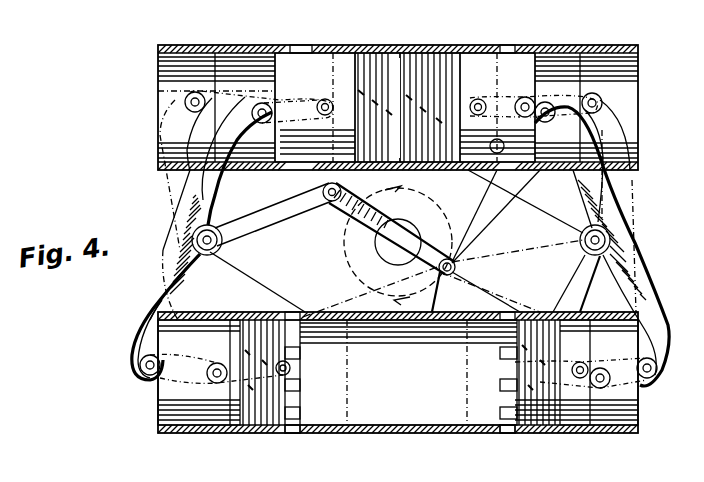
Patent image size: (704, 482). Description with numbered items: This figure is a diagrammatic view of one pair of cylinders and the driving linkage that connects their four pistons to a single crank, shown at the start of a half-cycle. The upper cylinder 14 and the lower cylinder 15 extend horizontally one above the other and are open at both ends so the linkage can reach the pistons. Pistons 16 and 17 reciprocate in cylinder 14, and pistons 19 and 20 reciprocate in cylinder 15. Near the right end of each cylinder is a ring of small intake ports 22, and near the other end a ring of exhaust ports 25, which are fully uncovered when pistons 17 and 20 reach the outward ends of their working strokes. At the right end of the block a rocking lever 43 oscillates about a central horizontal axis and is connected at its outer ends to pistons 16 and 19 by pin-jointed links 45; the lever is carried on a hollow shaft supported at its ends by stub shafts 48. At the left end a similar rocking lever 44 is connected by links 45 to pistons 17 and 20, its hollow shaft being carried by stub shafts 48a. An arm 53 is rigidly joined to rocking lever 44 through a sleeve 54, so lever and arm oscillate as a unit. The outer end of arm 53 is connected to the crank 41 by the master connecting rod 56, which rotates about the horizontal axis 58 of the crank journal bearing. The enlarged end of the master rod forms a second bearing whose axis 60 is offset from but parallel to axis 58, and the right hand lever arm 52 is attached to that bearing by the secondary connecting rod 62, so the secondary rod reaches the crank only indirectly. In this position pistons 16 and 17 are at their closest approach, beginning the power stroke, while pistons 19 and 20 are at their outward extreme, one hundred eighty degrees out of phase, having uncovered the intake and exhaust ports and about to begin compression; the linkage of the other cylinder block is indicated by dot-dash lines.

The cylinder 14 is at (618, 94).
The cylinder 15 is at (398, 372).
The piston 16 is at (470, 64).
The piston 17 is at (340, 62).
The piston 19 is at (580, 428).
The piston 20 is at (220, 428).
The intake ports 22 is at (508, 45).
The exhaust ports 25 is at (301, 44).
The crank 41 is at (401, 265).
The rocking lever 43 is at (636, 270).
The rocking lever 44 is at (180, 194).
The links 45 is at (305, 100).
The stub shaft 48 is at (606, 240).
The stub shaft 48a is at (206, 240).
The right hand lever arm 52 is at (538, 206).
The arm 53 is at (282, 228).
The sleeve 54 is at (182, 232).
The master connecting rod 56 is at (382, 216).
The axis 58 is at (456, 268).
The axis 60 is at (453, 263).
The secondary connecting rod 62 is at (345, 294).